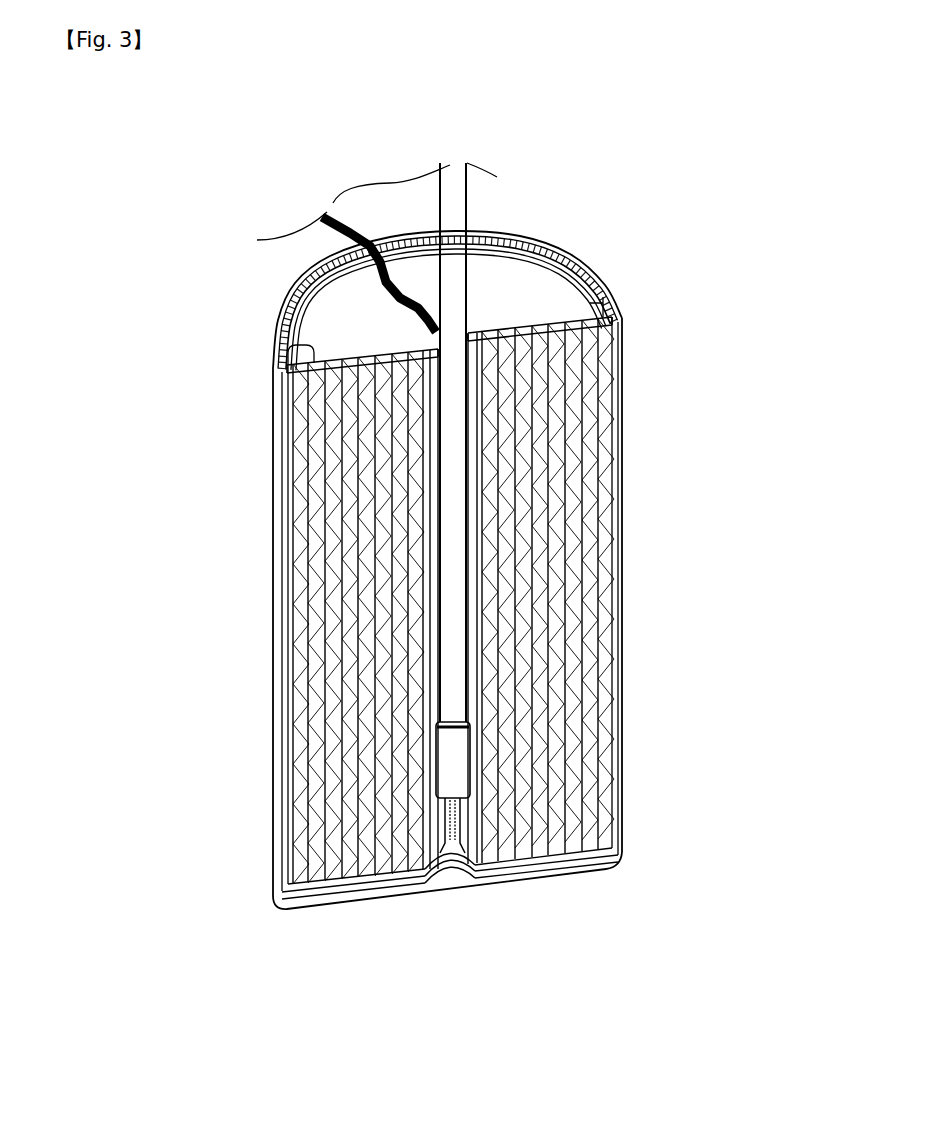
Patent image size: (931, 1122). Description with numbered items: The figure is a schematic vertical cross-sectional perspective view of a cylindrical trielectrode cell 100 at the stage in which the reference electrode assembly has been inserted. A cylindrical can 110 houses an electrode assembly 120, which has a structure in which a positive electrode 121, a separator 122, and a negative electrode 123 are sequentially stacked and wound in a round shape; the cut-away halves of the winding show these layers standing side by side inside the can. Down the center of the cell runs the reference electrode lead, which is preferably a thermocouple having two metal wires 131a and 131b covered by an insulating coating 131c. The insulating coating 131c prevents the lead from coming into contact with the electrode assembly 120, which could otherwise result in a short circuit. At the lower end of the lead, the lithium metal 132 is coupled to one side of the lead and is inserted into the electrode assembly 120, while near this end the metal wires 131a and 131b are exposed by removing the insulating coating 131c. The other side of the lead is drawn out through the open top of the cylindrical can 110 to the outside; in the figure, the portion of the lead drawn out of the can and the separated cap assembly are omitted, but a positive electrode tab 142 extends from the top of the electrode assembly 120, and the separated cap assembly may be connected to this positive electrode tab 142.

The cylindrical trielectrode cell 100 is at (160, 174).
The cylindrical can 110 is at (625, 578).
The electrode assembly 120 is at (780, 957).
The positive electrode 121 is at (552, 835).
The separator 122 is at (538, 835).
The negative electrode 123 is at (522, 835).
The metal wire 131a is at (432, 880).
The metal wire 131b is at (460, 882).
The insulating coating 131c is at (450, 592).
The lithium metal 132 is at (445, 758).
The positive electrode tab 142 is at (413, 278).